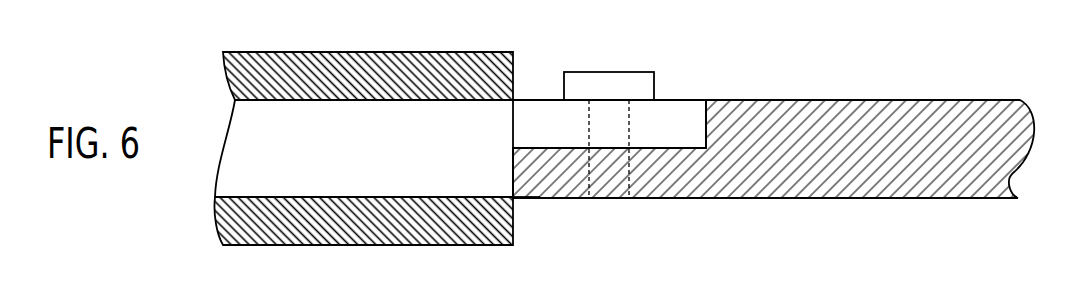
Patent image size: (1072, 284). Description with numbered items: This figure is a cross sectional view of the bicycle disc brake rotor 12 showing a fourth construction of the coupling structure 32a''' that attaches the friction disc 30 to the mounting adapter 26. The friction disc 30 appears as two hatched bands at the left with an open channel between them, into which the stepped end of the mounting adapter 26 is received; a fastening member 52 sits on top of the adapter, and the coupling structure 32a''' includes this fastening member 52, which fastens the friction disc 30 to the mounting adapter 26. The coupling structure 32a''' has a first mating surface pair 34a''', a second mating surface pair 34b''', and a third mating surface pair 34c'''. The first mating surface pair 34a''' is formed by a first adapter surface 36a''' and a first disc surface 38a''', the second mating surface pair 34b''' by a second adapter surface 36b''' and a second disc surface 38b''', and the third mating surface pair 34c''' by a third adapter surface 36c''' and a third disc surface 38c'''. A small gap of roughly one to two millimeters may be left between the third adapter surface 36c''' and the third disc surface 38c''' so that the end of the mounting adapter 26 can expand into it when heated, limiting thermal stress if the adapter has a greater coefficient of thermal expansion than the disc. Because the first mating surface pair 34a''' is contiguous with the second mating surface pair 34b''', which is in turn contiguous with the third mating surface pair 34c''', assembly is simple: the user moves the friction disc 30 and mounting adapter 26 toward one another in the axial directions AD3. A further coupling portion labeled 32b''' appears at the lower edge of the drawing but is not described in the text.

The bicycle disc brake rotor 12 is at (773, 102).
The mounting adapter 26 is at (857, 160).
The friction disc 30 is at (213, 249).
The coupling structure 32a''' is at (565, 100).
The second joint portion 32b''' is at (528, 240).
The first mating surface pair 34a''' is at (470, 172).
The second mating surface pair 34b''' is at (556, 126).
The third mating surface pair 34c''' is at (670, 133).
The first adapter surface 36a''' is at (492, 155).
The second adapter surface 36b''' is at (560, 138).
The third adapter surface 36c''' is at (684, 124).
The first disc surface 38a''' is at (535, 178).
The second disc surface 38b''' is at (579, 160).
The third disc surface 38c''' is at (729, 118).
The fastening member 52 is at (610, 72).
The axial directions AD3 is at (677, 70).